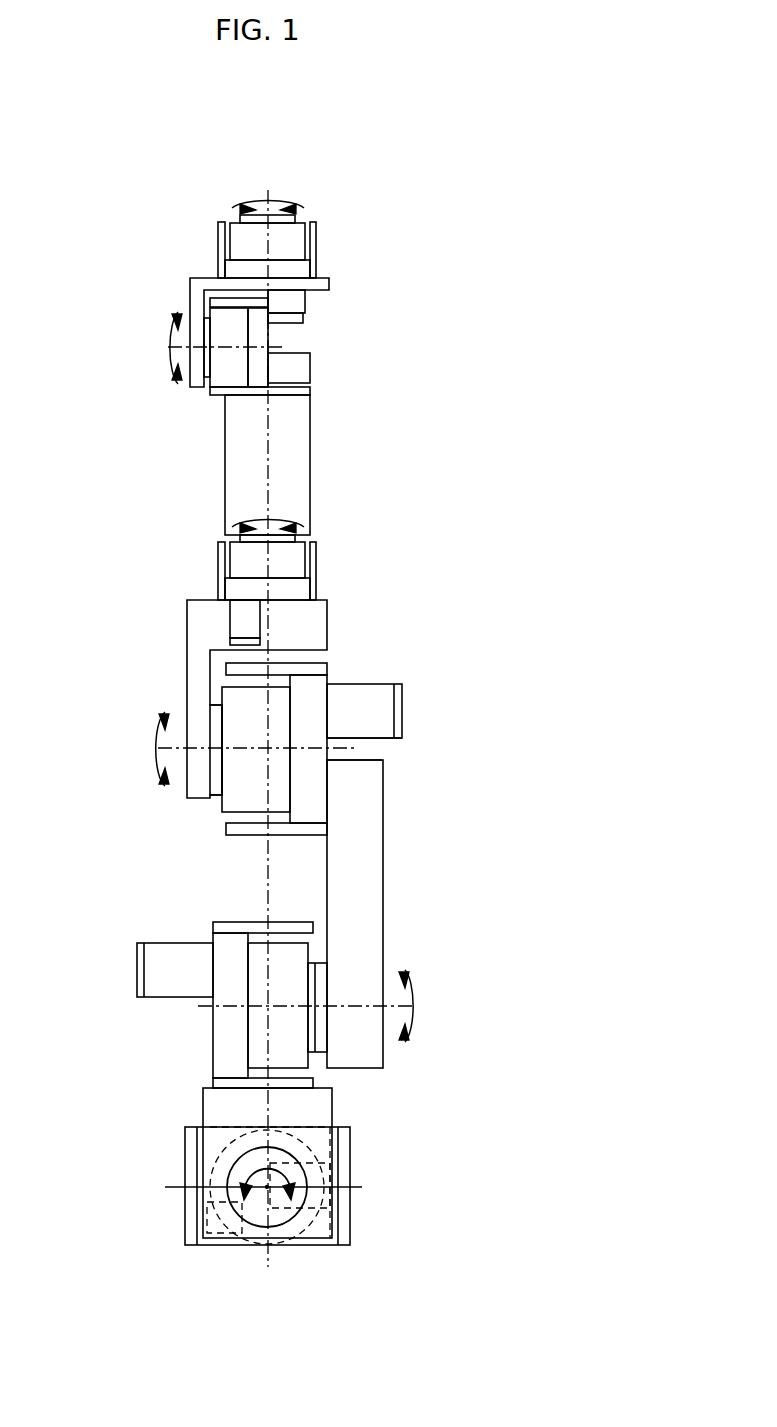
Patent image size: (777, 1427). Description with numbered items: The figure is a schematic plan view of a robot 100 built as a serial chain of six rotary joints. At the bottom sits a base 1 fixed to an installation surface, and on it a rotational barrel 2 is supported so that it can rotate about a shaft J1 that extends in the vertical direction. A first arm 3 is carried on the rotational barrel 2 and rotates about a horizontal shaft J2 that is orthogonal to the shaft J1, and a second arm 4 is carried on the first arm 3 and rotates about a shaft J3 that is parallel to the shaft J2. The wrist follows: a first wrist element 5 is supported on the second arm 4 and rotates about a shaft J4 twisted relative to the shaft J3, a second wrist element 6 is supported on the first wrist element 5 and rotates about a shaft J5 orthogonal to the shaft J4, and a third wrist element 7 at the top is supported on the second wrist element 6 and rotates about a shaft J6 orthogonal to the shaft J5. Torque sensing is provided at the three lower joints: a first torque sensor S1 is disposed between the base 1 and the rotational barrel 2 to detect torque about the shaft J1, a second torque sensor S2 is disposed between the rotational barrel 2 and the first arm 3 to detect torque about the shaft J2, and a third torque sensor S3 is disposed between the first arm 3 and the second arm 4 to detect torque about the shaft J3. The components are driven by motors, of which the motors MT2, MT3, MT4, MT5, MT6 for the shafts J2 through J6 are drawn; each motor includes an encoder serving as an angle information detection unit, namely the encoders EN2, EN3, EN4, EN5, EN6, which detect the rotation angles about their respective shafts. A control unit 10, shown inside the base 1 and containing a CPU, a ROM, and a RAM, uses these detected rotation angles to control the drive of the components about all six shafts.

The robot 100 is at (370, 168).
The base 1 is at (185, 1197).
The rotational barrel 2 is at (203, 1092).
The first arm 3 is at (383, 868).
The second arm 4 is at (188, 657).
The first wrist element 5 is at (228, 458).
The second wrist element 6 is at (200, 280).
The third wrist element 7 is at (232, 218).
The control unit 10 is at (213, 1233).
The shaft (target joint) J1 is at (267, 1190).
The shaft (joint) J2 is at (428, 1006).
The shaft (joint) J3 is at (141, 749).
The shaft (joint) J4 is at (268, 504).
The shaft (joint) J5 is at (151, 348).
The shaft (joint) J6 is at (268, 184).
The first torque sensor S1 is at (313, 1140).
The second torque sensor S2 is at (320, 962).
The third torque sensor S3 is at (215, 797).
The motor MT2 is at (157, 943).
The motor MT3 is at (382, 740).
The motor MT4 is at (232, 620).
The motor MT5 is at (290, 383).
The motor MT6 is at (305, 300).
The encoder (angle information detection unit) EN2 is at (137, 967).
The encoder (angle information detection unit) EN3 is at (402, 712).
The encoder (angle information detection unit) EN4 is at (258, 640).
The encoder (angle information detection unit) EN5 is at (312, 365).
The encoder (angle information detection unit) EN6 is at (290, 322).